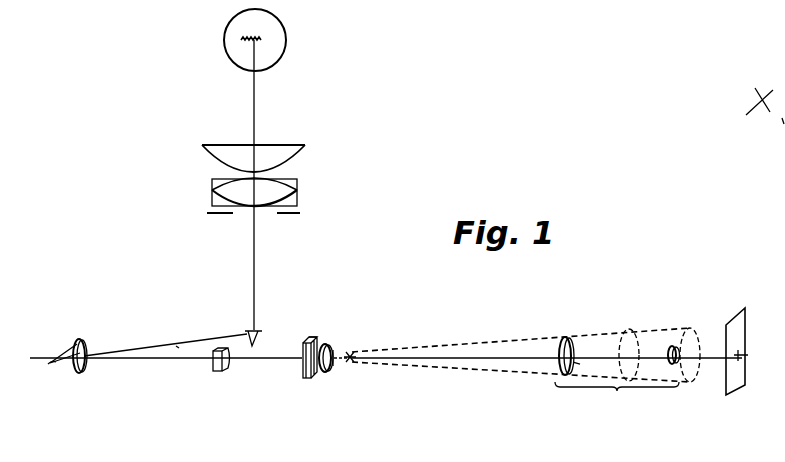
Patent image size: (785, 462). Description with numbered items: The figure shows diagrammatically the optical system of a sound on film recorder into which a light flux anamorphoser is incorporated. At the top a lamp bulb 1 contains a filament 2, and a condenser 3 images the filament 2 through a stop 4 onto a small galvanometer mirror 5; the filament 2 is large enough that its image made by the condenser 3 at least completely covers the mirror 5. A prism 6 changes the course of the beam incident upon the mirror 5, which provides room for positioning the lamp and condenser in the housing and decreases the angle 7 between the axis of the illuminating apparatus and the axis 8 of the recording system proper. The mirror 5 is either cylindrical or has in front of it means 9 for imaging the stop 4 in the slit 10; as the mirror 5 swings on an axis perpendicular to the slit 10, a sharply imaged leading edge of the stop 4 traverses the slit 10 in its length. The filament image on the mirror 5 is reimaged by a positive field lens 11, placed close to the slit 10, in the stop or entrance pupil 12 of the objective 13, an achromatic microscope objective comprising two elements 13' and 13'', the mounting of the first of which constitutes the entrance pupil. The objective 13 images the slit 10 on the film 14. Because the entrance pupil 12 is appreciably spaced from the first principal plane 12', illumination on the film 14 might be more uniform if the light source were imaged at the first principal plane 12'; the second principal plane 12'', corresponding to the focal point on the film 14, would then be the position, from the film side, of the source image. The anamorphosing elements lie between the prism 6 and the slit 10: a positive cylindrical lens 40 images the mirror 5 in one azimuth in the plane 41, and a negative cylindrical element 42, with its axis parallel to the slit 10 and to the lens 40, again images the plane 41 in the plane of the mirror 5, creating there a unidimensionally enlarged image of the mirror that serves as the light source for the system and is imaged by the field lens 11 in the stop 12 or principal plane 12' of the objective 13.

The lamp bulb 1 is at (284, 62).
The filament 2 is at (262, 40).
The condenser 3 is at (200, 145).
The stop 4 is at (279, 215).
The galvanometer mirror 5 is at (54, 366).
The prism 6 is at (259, 334).
The angle 7 is at (180, 351).
The axis of the recording system 8 is at (152, 360).
The imaging means 9 is at (84, 372).
The slit 10 is at (316, 378).
The positive field lens 11 is at (331, 352).
The entrance pupil 12 is at (576, 347).
The first principal plane 12' is at (703, 349).
The second principal plane 12'' is at (641, 344).
The objective 13 is at (617, 395).
The first objective element 13' is at (587, 366).
The second objective element 13'' is at (665, 361).
The film 14 is at (729, 396).
The positive cylindrical lens 40 is at (221, 373).
The plane 41 is at (353, 362).
The negative cylindrical element 42 is at (314, 340).